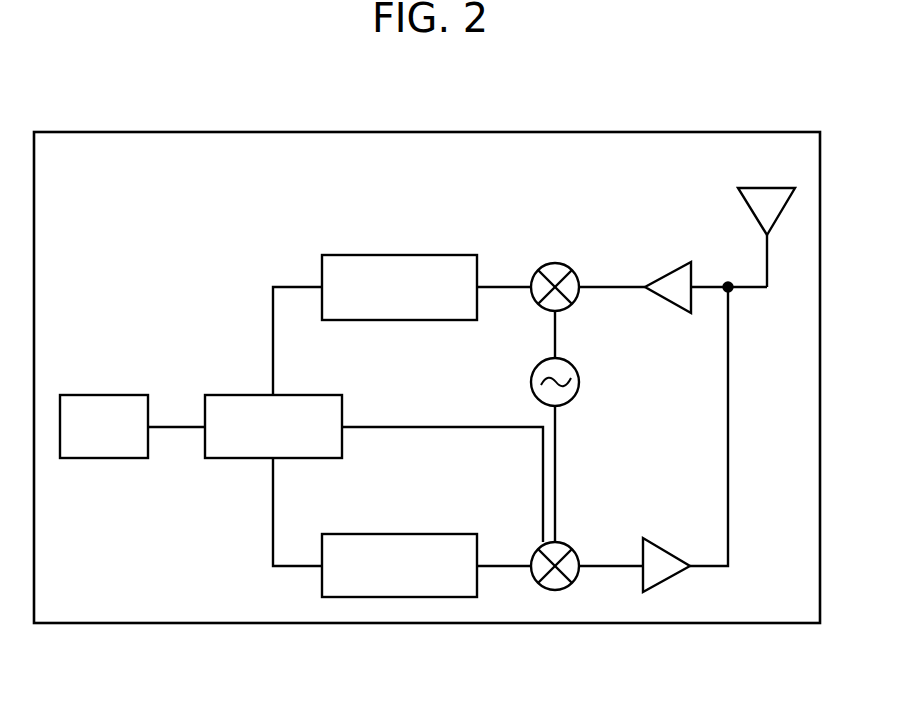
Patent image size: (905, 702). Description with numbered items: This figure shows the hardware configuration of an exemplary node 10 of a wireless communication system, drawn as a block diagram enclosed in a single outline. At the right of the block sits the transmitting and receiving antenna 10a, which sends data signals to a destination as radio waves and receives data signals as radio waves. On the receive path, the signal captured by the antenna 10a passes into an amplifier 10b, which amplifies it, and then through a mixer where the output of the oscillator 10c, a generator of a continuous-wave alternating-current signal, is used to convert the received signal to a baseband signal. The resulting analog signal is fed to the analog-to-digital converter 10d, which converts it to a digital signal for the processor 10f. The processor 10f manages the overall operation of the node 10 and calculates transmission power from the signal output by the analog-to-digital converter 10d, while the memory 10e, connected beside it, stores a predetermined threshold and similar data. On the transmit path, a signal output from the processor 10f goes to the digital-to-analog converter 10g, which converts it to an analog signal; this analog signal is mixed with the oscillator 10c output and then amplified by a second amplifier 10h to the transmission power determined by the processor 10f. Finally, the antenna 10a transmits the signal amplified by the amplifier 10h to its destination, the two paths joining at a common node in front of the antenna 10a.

The node 10 is at (752, 132).
The transmitting and receiving antenna 10a is at (752, 188).
The amplifier 10b is at (675, 271).
The oscillator 10c is at (580, 382).
The analog-to-digital converter 10d is at (441, 255).
The memory 10e is at (118, 395).
The processor 10f is at (301, 395).
The digital-to-analog converter 10g is at (441, 534).
The amplifier 10h is at (665, 553).